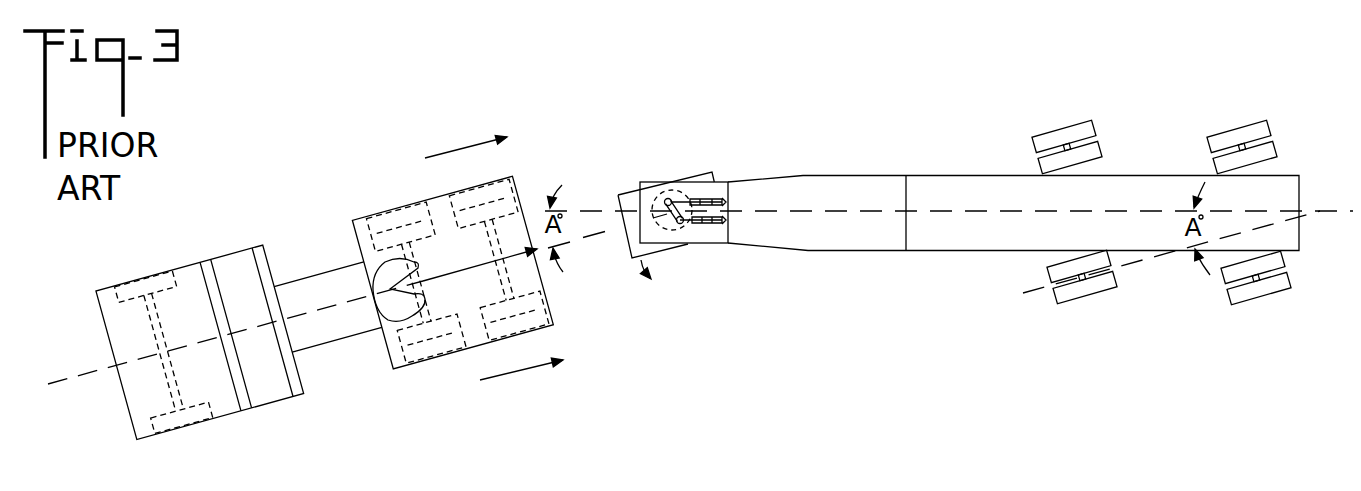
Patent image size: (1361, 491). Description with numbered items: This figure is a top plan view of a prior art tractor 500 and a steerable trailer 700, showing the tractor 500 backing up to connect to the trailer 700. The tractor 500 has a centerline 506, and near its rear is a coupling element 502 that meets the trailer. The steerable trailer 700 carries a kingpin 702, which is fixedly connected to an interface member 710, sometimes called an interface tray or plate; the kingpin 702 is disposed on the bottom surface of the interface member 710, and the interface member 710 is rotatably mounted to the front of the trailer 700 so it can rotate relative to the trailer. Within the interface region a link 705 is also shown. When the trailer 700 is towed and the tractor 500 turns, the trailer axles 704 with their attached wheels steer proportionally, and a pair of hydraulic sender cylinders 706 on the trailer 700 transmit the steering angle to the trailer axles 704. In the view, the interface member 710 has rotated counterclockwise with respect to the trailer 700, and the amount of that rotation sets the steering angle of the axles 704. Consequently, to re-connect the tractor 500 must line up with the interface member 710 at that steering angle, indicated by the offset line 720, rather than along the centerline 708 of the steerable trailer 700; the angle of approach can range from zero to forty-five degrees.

The tractor 500 is at (305, 287).
The hitch / coupling 502 is at (383, 288).
The centerline 506 is at (52, 386).
The steerable trailer 700 is at (949, 220).
The kingpin 702 is at (671, 199).
The trailer axles 704 is at (1109, 143).
The crank link 705 is at (670, 220).
The hydraulic sender cylinders 706 is at (713, 202).
The centerline 708 is at (845, 212).
The interface member 710 is at (633, 202).
The offset axis line 720 is at (583, 238).